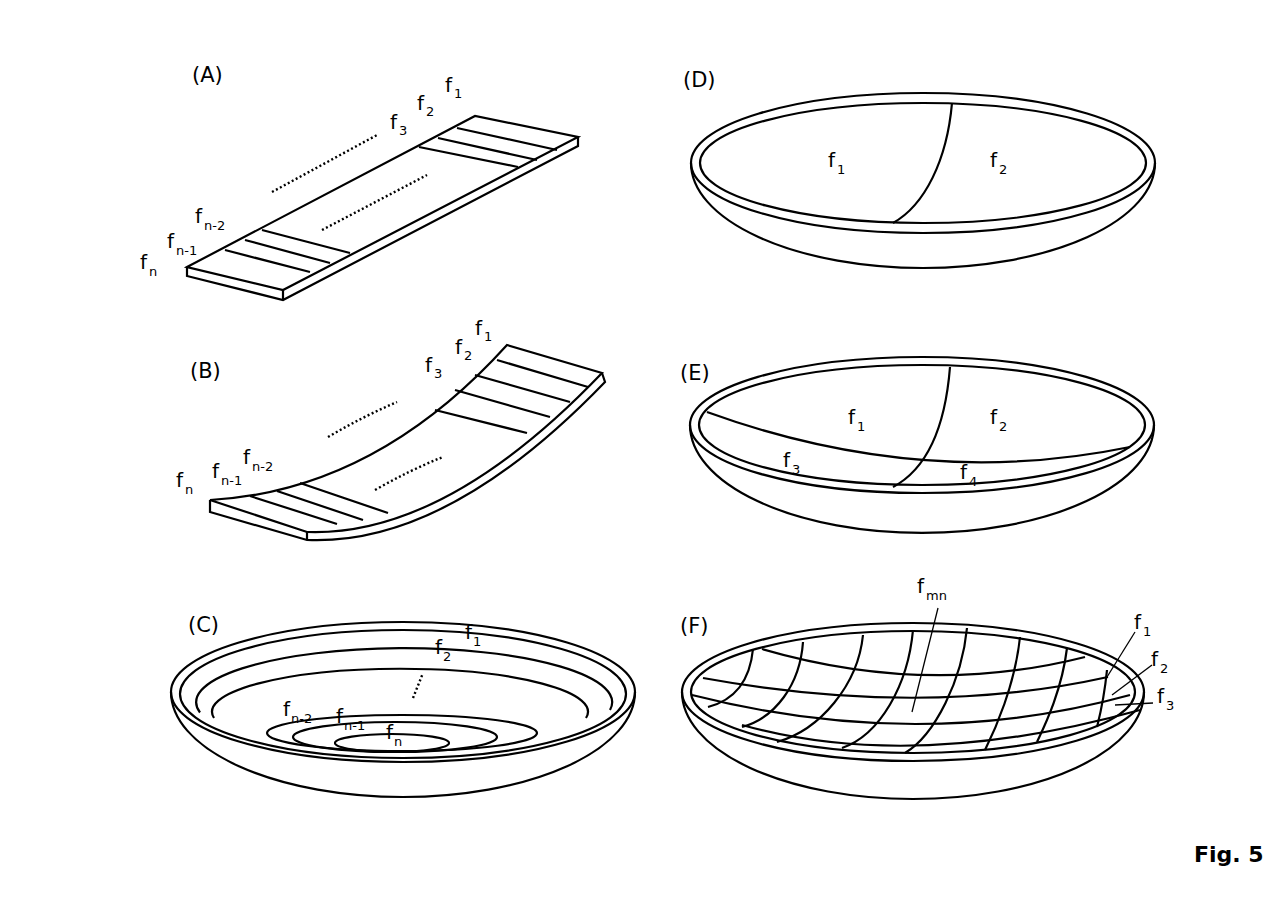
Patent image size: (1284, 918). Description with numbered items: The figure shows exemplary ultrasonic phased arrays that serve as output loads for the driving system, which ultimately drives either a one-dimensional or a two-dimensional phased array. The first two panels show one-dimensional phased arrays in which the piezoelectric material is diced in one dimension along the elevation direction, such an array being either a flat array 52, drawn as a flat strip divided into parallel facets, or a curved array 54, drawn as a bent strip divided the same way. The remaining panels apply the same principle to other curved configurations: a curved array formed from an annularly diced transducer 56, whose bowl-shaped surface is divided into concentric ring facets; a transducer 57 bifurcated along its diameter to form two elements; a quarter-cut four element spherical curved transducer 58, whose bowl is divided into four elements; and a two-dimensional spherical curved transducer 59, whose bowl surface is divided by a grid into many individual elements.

In FIG. 5A, the flat array 52 is at (467, 208).
In FIG. 5B, the curved array 54 is at (530, 468).
In FIG. 5C, the annularly diced transducer 56 is at (537, 633).
In FIG. 5D, the transducer bifurcated along its diameter 57 is at (860, 268).
In FIG. 5E, the quarter-cut four element spherical curved transducer 58 is at (747, 493).
In FIG. 5F, the two-dimensional spherical curved transducer 59 is at (800, 627).